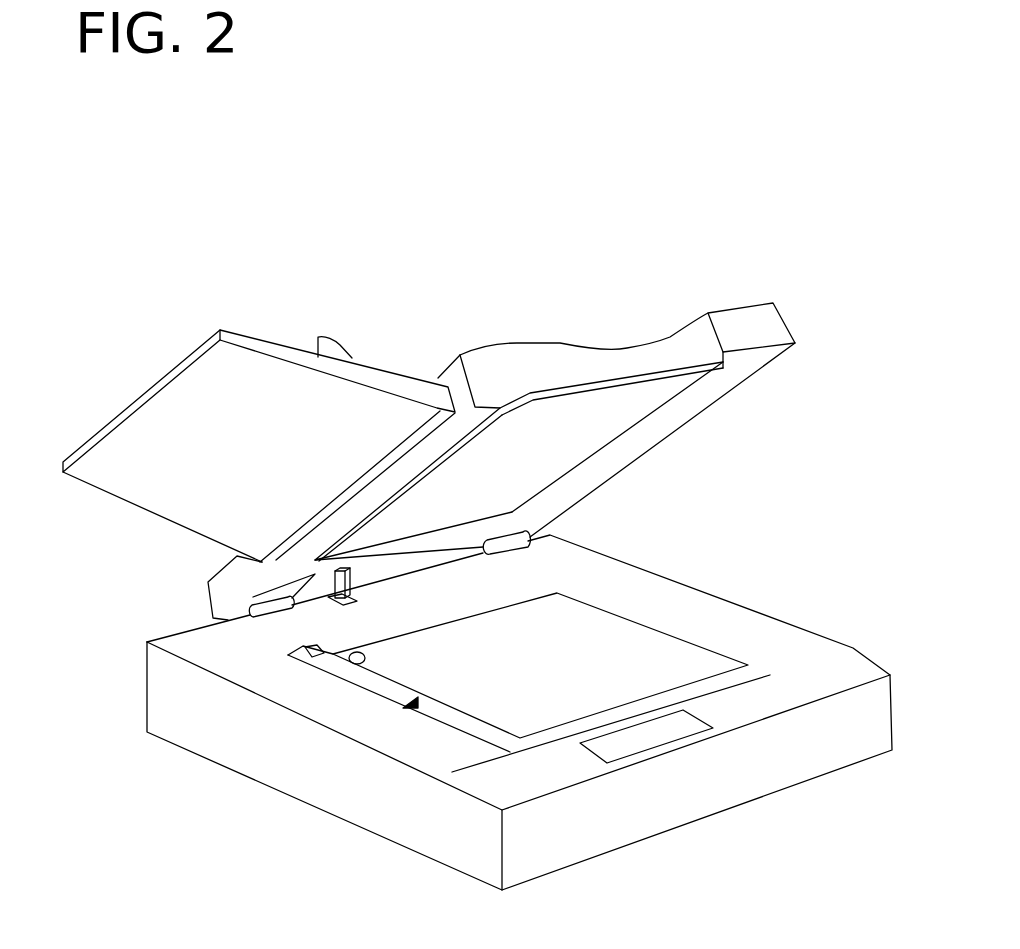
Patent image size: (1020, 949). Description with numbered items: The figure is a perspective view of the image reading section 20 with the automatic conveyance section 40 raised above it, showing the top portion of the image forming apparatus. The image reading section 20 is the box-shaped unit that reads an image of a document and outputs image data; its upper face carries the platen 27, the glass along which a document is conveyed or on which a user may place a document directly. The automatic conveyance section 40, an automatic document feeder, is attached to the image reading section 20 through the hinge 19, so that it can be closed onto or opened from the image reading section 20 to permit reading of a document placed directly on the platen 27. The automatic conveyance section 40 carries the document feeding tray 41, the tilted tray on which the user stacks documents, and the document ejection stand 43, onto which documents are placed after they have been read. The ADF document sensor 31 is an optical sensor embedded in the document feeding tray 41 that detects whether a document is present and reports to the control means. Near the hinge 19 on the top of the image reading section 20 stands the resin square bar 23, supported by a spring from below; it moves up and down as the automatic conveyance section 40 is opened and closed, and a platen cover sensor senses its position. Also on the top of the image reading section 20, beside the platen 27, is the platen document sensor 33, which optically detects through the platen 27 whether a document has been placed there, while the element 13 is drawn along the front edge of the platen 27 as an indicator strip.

The reading line indicator strip 13 is at (437, 713).
The hinge 19 is at (540, 560).
The image reading section 20 is at (812, 628).
The resin square bar 23 is at (352, 577).
The platen 27 is at (587, 623).
The ADF document sensor 31 is at (647, 738).
The platen document sensor 33 is at (357, 665).
The automatic conveyance section 40 is at (741, 283).
The document feeding tray 41 is at (270, 347).
The document ejection stand 43 is at (578, 442).